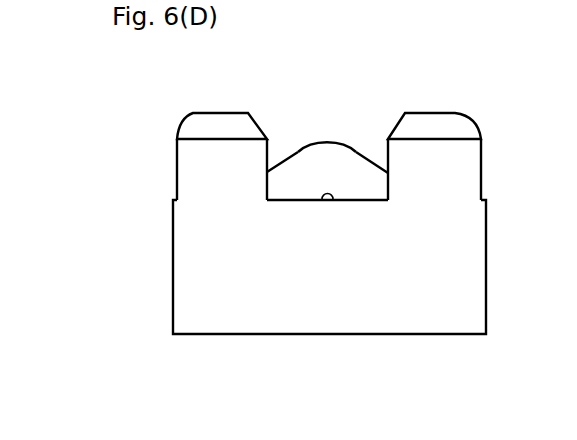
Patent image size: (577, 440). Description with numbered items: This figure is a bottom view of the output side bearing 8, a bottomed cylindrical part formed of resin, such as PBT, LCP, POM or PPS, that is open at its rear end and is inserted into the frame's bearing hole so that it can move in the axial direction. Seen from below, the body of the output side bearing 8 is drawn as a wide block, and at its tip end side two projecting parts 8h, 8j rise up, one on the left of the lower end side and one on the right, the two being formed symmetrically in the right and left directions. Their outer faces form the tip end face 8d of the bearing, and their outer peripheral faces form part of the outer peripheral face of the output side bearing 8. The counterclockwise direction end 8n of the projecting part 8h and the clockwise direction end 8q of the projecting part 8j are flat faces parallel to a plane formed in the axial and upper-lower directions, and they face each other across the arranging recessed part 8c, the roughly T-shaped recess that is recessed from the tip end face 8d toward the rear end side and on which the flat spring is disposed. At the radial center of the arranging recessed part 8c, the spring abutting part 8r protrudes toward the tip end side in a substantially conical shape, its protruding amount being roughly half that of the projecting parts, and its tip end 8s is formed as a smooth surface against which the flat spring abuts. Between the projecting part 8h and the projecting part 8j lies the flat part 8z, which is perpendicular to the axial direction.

The output side bearing 8 is at (486, 295).
The projecting part 8h is at (177, 166).
The projecting part 8j is at (481, 165).
The tip end face 8d is at (222, 113).
The counterclockwise direction end 8n is at (268, 158).
The clockwise direction end 8q is at (387, 157).
The arranging recessed part 8c is at (296, 138).
The tip end 8s is at (330, 141).
The spring abutting part 8r is at (368, 156).
The flat part 8z is at (333, 199).